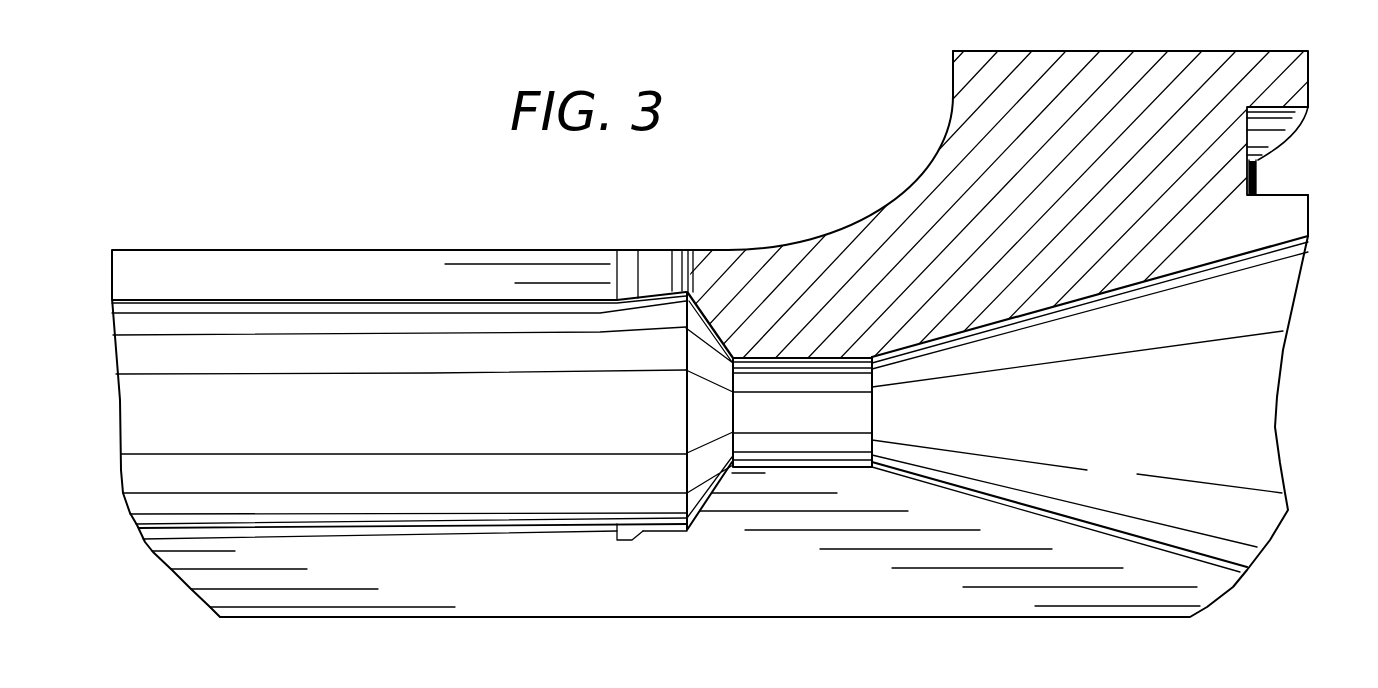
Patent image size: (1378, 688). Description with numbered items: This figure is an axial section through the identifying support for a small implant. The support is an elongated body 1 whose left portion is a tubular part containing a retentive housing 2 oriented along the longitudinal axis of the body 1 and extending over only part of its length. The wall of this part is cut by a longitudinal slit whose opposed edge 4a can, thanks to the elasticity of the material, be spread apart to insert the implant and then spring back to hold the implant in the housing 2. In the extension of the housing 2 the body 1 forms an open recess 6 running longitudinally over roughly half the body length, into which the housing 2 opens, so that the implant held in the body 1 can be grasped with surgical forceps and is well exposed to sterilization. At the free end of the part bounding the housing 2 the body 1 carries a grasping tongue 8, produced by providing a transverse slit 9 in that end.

The body 1 is at (597, 633).
The retentive housing 2 is at (850, 466).
The opposed edge of the slit 4a is at (1042, 512).
The open recess 6 is at (410, 426).
The grasping tongue 8 is at (1308, 52).
The transverse slit 9 is at (1298, 161).